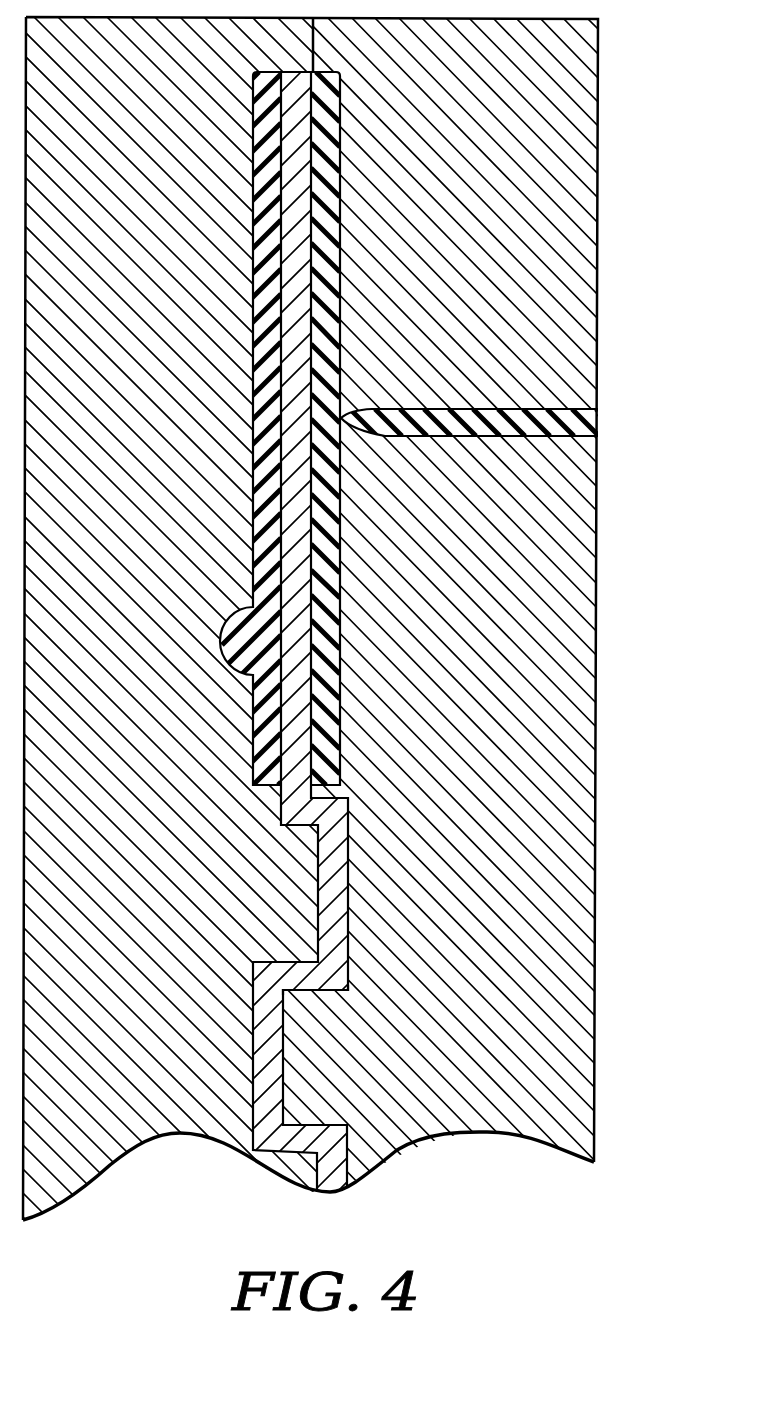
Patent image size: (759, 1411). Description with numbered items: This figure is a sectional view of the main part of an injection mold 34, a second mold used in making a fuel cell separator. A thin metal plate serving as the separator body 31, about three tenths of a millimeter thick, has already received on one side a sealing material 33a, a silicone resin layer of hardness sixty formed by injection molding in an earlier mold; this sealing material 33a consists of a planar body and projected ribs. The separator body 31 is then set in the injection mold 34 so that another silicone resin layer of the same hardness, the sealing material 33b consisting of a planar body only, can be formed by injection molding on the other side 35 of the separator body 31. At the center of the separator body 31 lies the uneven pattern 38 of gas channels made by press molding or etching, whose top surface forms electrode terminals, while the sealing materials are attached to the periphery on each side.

The separator body 31 is at (288, 85).
The sealing material 33a is at (257, 247).
The sealing material 33b is at (325, 318).
The injection mold 34 is at (606, 222).
The other side 35 is at (315, 140).
The uneven pattern of gas channels 38 is at (330, 993).